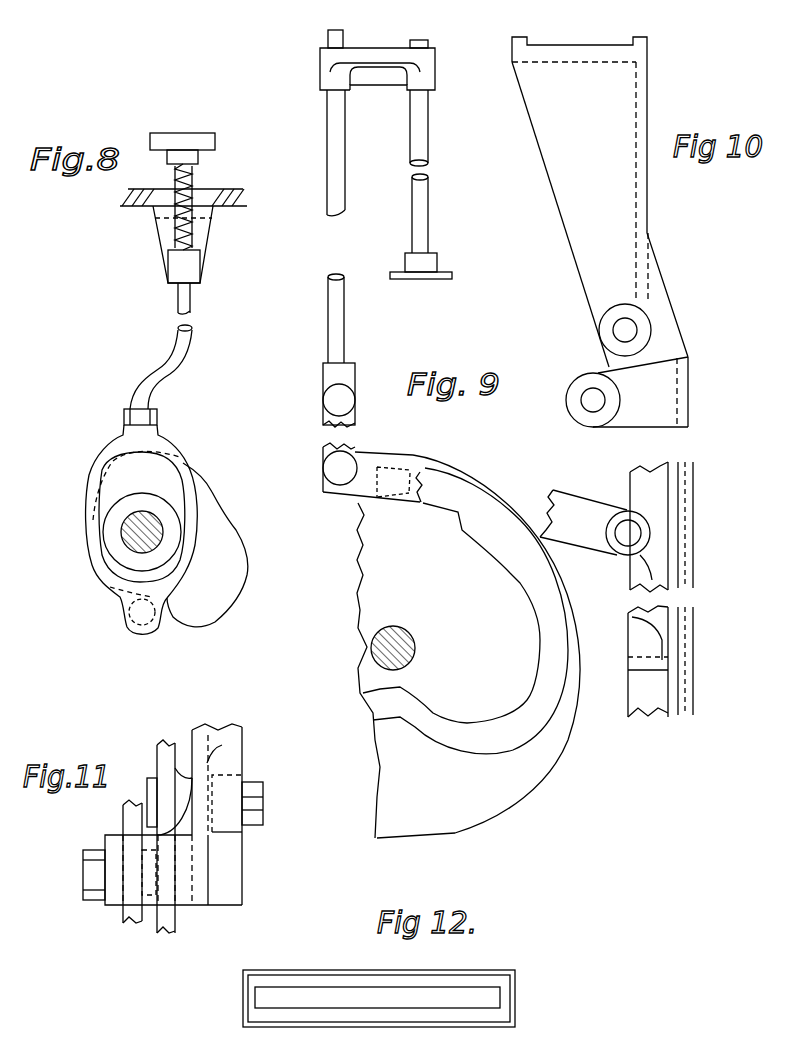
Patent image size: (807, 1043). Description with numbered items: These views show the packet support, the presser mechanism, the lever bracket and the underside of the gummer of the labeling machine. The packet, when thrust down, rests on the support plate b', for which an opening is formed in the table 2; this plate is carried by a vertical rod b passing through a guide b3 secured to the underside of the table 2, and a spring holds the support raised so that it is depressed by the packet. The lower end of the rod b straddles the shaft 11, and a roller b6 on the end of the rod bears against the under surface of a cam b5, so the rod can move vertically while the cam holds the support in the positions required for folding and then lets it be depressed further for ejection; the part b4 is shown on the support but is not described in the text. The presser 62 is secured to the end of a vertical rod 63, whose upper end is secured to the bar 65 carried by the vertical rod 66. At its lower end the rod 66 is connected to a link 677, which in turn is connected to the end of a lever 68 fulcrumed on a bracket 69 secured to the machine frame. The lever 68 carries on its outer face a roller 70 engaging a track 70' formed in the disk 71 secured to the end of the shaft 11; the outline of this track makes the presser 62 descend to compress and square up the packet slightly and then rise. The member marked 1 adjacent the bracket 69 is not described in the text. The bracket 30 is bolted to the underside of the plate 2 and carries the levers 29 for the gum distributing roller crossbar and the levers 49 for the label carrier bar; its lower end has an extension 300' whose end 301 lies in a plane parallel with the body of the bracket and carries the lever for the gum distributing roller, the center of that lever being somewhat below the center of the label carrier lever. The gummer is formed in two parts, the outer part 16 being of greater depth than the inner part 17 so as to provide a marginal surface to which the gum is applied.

In FIG. 8, the support plate b' is at (193, 191).
In FIG. 8, the table plate 2 is at (238, 207).
In FIG. 8, the guide b3 is at (200, 253).
In FIG. 8, the vertical rod b is at (174, 367).
In FIG. 8, the body housing b4 is at (178, 461).
In FIG. 8, the cam b5 is at (207, 545).
In FIG. 8, the roller b6 is at (157, 631).
In FIG. 8, the shaft 11 is at (135, 550).
In FIG. 9, the shaft 11 is at (405, 640).
In FIG. 9, the bar 65 is at (380, 77).
In FIG. 9, the vertical rod 66 is at (340, 180).
In FIG. 9, the vertical rod 63 is at (440, 210).
In FIG. 9, the presser 62 is at (421, 282).
In FIG. 9, the link 677 is at (356, 417).
In FIG. 9, the roller 70 is at (383, 464).
In FIG. 9, the lever 68 is at (418, 473).
In FIG. 9, the track 70' is at (470, 608).
In FIG. 9, the disk 71 is at (428, 670).
In FIG. 9, the bracket 69 is at (637, 633).
In FIG. 9, the plate 1 is at (688, 646).
In FIG. 10, the bracket 30 is at (600, 202).
In FIG. 10, the extension 300' is at (700, 374).
In FIG. 11, the extension 300' is at (227, 814).
In FIG. 10, the end of extension 301 is at (627, 392).
In FIG. 11, the end of extension 301 is at (200, 870).
In FIG. 11, the levers 29 is at (140, 808).
In FIG. 11, the levers 49 is at (167, 762).
In FIG. 12, the outer part of gummer 16 is at (458, 978).
In FIG. 12, the inner part of gummer 17 is at (318, 998).